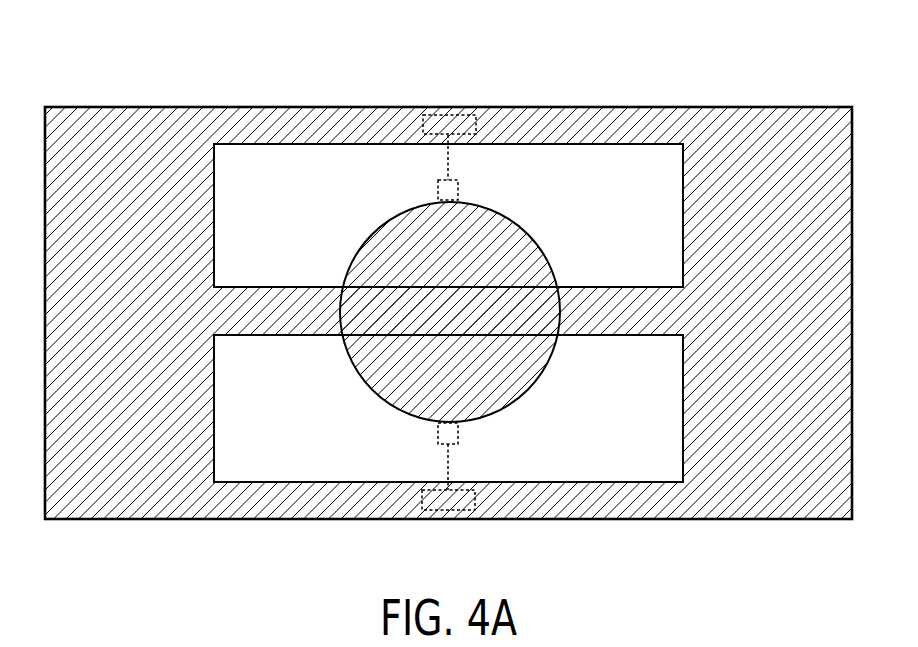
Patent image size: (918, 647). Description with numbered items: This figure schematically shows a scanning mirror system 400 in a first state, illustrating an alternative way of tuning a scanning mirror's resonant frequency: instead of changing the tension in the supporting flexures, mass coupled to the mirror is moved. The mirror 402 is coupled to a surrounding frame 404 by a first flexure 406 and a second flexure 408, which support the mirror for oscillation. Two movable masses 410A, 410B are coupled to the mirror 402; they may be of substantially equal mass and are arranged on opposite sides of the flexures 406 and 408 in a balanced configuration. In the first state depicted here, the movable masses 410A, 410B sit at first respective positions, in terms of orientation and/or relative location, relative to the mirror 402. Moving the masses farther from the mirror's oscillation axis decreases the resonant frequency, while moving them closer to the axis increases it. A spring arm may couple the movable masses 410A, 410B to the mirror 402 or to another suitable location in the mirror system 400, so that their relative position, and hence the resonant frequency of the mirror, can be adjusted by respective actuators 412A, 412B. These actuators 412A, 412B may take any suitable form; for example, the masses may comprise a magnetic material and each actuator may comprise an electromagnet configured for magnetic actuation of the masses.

The scanning mirror system 400 is at (449, 52).
The mirror 402 is at (374, 262).
The frame 404 is at (627, 118).
The first flexure 406 is at (270, 312).
The second flexure 408 is at (587, 310).
The movable mass 410A is at (459, 190).
The movable mass 410B is at (459, 433).
The actuator 412A is at (449, 113).
The actuator 412B is at (449, 510).